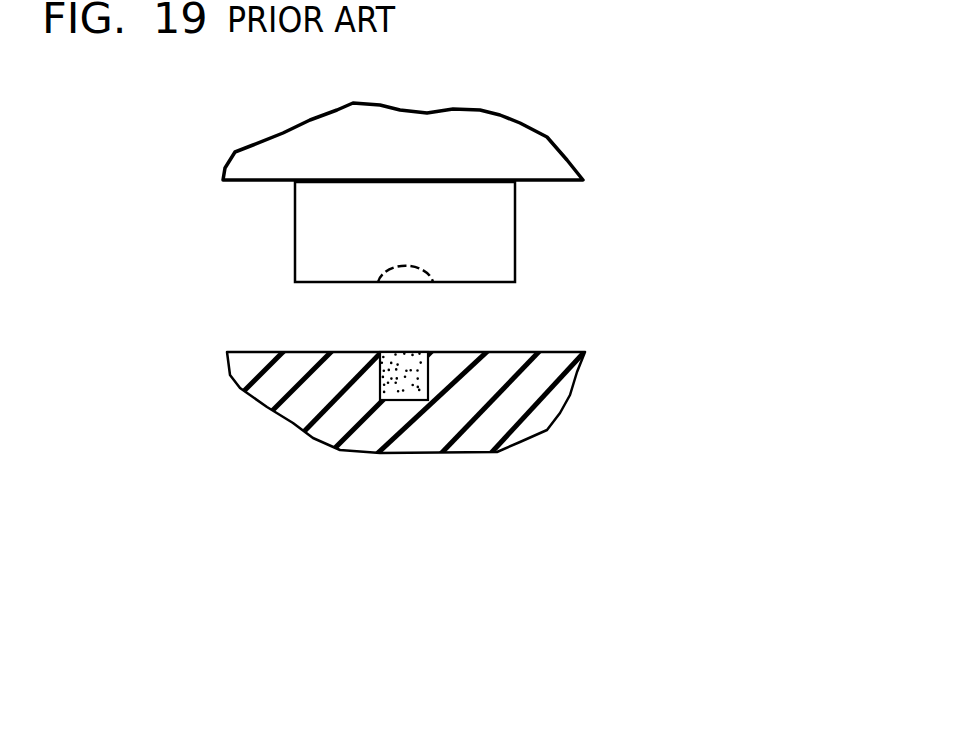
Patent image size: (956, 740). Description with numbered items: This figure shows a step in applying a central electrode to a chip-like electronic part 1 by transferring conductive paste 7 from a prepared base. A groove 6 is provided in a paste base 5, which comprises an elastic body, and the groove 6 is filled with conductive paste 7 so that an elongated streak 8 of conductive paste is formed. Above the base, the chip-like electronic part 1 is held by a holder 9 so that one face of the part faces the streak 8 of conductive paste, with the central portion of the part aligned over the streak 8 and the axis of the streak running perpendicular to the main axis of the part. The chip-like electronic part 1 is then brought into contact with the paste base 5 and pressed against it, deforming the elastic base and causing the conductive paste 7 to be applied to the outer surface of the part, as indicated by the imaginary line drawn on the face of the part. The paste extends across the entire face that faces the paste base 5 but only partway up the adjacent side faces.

The chip-like electronic part 1 is at (294, 223).
The paste base 5 is at (572, 393).
The groove 6 is at (388, 352).
The conductive paste 7 is at (422, 267).
The streak of conductive paste 8 is at (410, 352).
The holder 9 is at (538, 133).